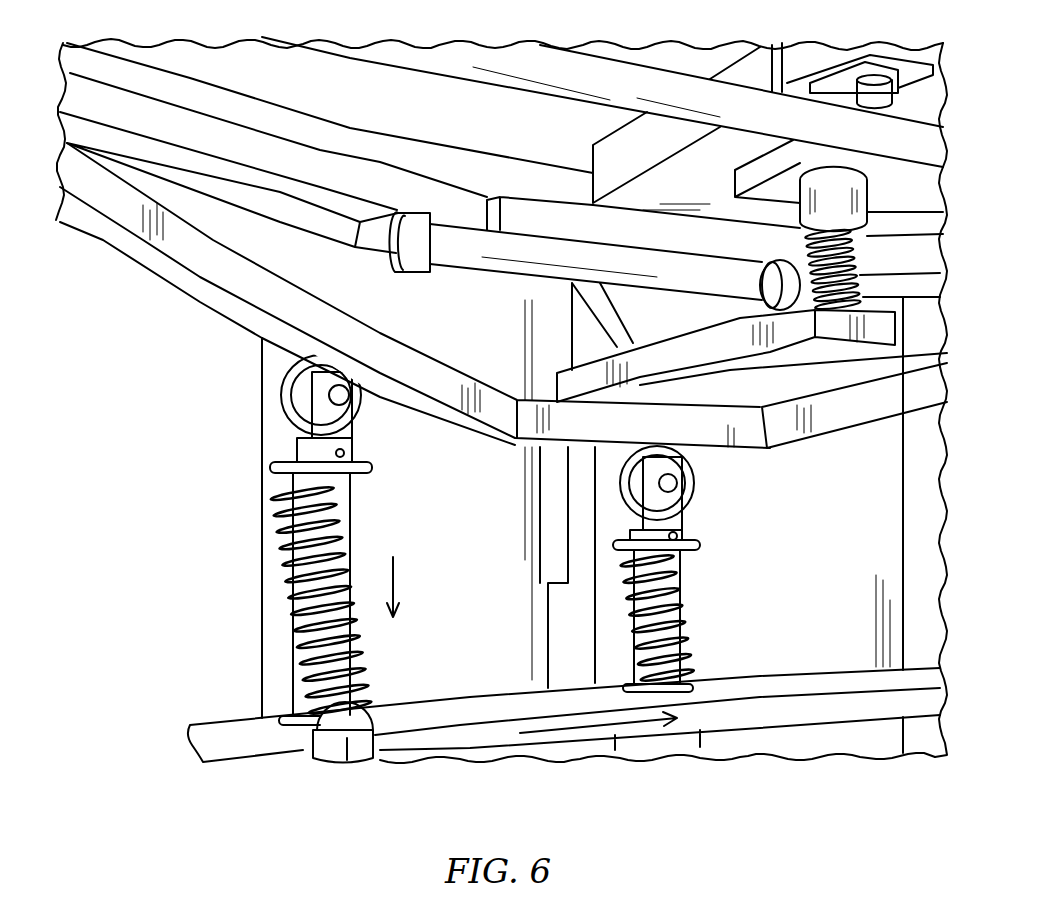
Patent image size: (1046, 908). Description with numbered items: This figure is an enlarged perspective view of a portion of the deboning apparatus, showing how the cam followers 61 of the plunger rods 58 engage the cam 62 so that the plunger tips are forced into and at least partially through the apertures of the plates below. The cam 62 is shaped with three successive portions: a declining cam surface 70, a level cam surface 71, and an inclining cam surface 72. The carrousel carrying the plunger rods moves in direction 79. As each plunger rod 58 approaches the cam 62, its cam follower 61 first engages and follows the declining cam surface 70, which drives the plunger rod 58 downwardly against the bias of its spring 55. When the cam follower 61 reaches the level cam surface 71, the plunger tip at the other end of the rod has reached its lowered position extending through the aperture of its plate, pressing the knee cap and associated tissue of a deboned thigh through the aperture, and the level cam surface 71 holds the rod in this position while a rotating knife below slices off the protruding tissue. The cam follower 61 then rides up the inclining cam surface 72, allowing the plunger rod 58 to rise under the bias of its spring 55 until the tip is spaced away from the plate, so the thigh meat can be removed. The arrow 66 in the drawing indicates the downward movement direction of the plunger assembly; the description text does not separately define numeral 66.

The spring 55 is at (290, 541).
The plunger rod 58 is at (310, 518).
The cam follower 61 is at (280, 398).
The cam 62 is at (450, 320).
The direction arrow 66 is at (393, 583).
The declining cam surface 70 is at (232, 310).
The level cam surface 71 is at (707, 450).
The inclining cam surface 72 is at (852, 428).
The direction of carrousel movement 79 is at (577, 728).